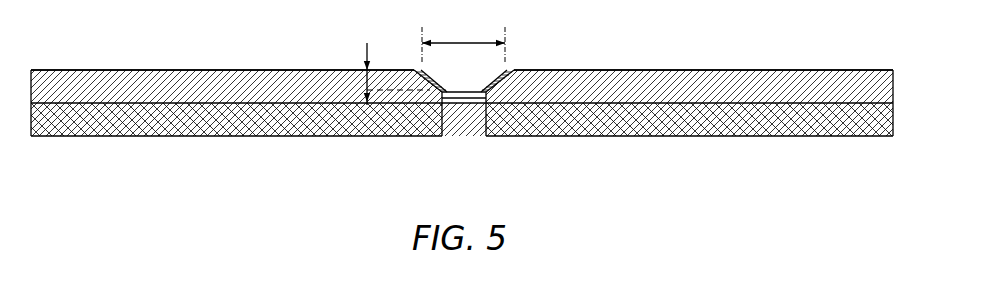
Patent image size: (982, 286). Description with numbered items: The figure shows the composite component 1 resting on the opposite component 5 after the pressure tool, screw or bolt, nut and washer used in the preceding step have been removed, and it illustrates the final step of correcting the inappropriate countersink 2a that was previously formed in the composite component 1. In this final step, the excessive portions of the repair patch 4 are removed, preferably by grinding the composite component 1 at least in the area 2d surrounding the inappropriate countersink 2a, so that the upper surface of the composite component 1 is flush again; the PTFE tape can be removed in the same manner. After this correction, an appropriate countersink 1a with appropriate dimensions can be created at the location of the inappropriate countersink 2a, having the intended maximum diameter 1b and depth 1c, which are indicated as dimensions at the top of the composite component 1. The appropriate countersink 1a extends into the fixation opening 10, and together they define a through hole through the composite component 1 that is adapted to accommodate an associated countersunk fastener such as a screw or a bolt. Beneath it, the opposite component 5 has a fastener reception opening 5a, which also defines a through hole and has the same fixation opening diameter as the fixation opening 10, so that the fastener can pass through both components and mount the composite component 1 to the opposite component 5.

The composite component 1 is at (855, 58).
The countersink 1a is at (488, 77).
The maximum diameter 1b is at (467, 40).
The depth 1c is at (365, 73).
The inappropriate countersink 2a is at (441, 82).
The area surrounding the inappropriate countersink 2d is at (633, 69).
The repair patch 4 is at (510, 74).
The opposite component 5 is at (97, 137).
The fastener reception opening 5a is at (490, 127).
The fixation opening 10 is at (491, 98).